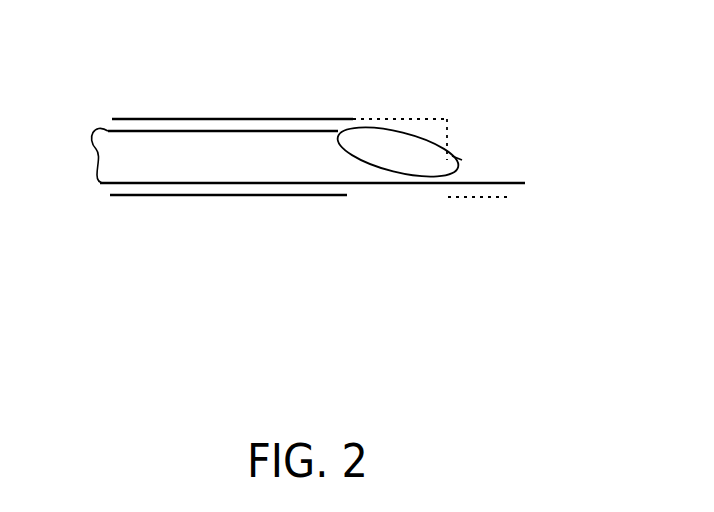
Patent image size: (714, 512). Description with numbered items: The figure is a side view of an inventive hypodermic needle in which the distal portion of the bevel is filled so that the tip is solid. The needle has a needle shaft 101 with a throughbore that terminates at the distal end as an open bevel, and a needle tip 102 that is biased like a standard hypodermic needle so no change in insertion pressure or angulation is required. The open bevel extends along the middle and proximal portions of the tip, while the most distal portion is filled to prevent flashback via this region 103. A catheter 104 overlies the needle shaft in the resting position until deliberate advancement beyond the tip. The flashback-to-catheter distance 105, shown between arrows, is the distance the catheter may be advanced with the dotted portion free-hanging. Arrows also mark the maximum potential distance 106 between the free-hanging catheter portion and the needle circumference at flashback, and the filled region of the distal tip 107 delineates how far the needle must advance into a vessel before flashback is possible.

The needle shaft 101 is at (199, 184).
The needle tip 102 is at (462, 160).
The filled distal portion of the bevel 103 is at (410, 158).
The catheter 104 is at (262, 195).
The flashback-to-catheter distance 105 is at (440, 116).
The maximum potential distance between free-hanging catheter and needle circumferenc 106 is at (456, 157).
The filled region of distal tip 107 is at (504, 208).